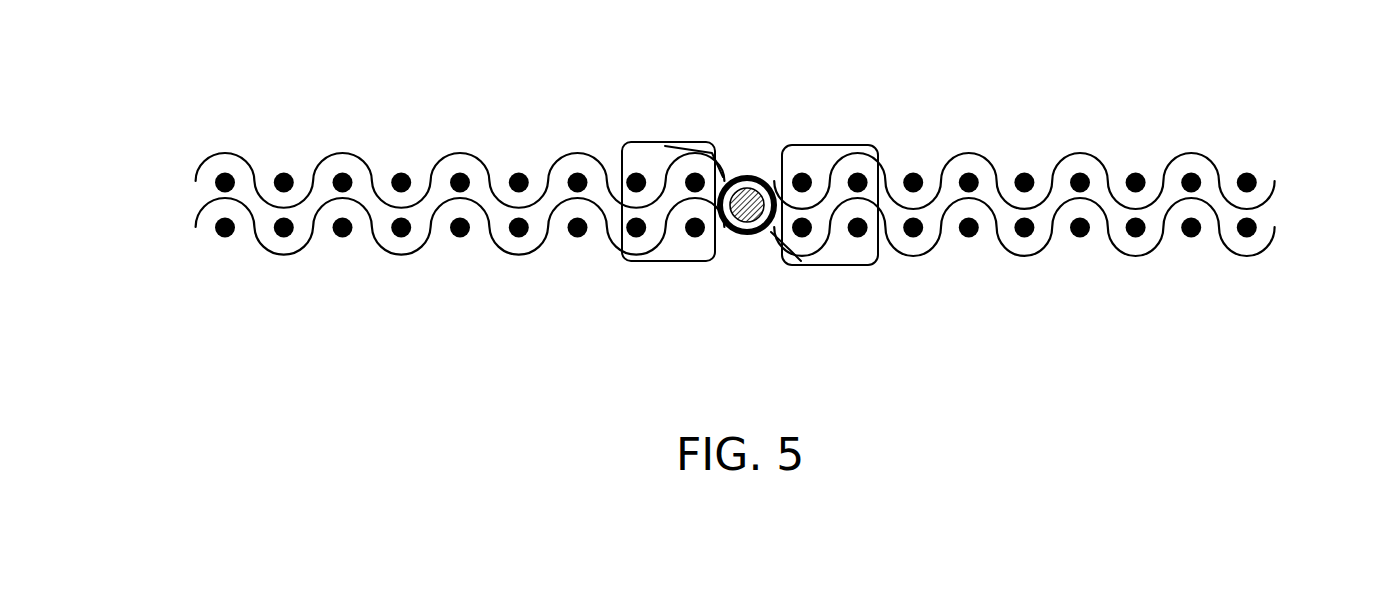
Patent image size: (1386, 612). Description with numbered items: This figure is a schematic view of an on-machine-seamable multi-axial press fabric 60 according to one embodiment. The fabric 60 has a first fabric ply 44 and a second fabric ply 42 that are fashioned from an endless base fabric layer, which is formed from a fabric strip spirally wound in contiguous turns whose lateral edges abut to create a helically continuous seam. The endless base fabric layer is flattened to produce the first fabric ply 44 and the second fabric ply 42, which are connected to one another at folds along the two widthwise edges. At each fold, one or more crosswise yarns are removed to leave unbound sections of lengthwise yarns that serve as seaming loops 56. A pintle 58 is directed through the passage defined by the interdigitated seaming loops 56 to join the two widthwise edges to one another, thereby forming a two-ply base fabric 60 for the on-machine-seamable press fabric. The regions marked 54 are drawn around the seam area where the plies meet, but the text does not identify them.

The second fabric ply 42 is at (203, 212).
The first fabric ply 44 is at (197, 180).
The end plate 54 is at (676, 143).
The seaming loops 56 is at (753, 173).
The pintle 58 is at (755, 240).
The fabric 60 is at (1141, 126).